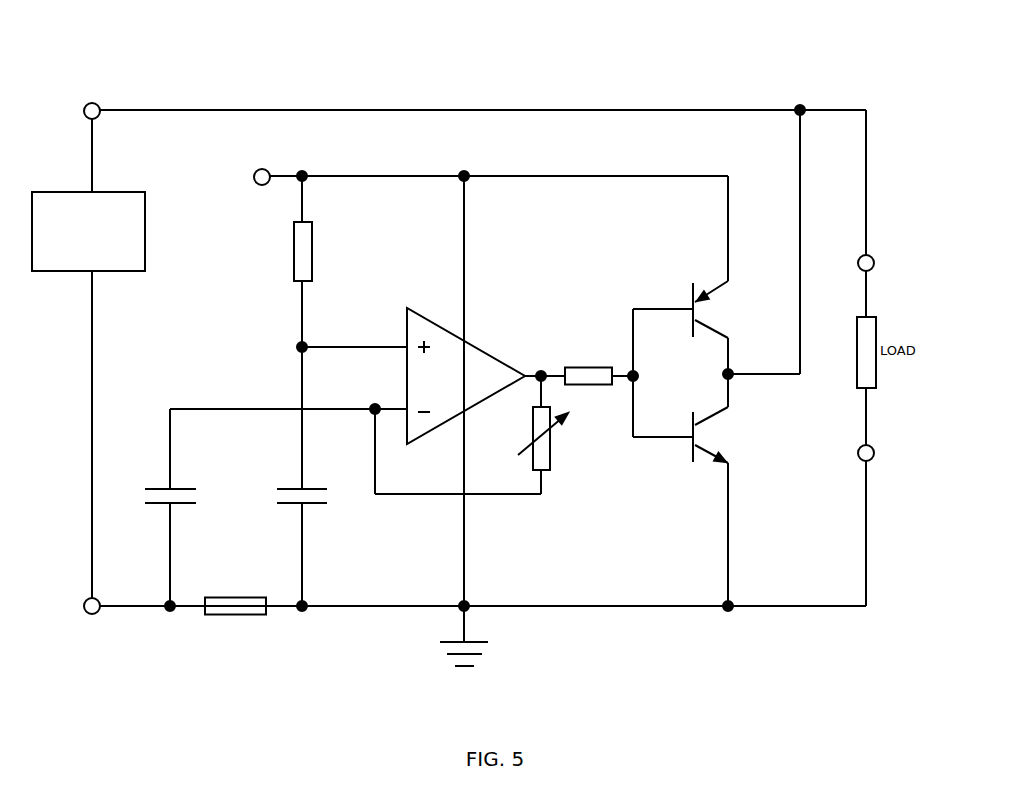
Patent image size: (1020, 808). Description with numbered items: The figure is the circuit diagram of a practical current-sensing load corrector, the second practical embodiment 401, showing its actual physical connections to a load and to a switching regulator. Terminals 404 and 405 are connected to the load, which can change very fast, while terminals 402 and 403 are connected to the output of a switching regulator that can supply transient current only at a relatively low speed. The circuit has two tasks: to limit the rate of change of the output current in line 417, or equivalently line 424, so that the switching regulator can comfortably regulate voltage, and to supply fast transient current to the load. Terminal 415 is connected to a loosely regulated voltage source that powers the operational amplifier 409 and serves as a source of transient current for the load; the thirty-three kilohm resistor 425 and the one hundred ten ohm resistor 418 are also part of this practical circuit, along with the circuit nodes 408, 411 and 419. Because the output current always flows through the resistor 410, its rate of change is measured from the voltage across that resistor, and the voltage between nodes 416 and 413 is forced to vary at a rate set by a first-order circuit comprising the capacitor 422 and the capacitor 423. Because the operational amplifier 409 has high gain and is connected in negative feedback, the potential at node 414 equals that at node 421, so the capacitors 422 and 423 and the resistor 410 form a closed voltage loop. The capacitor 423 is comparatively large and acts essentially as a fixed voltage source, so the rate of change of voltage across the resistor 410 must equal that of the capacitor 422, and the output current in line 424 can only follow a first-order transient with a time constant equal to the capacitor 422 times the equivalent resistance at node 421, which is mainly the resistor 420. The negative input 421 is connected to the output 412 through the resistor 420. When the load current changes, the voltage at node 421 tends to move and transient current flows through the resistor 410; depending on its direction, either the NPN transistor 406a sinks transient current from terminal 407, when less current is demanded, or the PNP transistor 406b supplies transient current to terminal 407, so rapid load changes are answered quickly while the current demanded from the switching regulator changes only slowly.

The second practical embodiment of the load corrector 401 is at (513, 83).
The terminal 402 is at (72, 113).
The terminal 403 is at (72, 607).
The terminal 404 is at (884, 213).
The terminal 405 is at (885, 497).
The NPN transistor 406a is at (725, 490).
The PNP transistor 406b is at (726, 327).
The terminal 407 is at (774, 226).
The node 408 is at (726, 622).
The operational amplifier 409 is at (466, 376).
The resistor 410 is at (235, 594).
The ground node 411 is at (474, 421).
The output 412 is at (545, 363).
The node 413 is at (171, 571).
The node 414 is at (331, 414).
The terminal 415 is at (469, 224).
The node 416 is at (309, 572).
The line 417 is at (483, 99).
The resistor 418 is at (599, 363).
The node 419 is at (660, 373).
The resistor 420 is at (553, 435).
The negative input 421 is at (355, 449).
The capacitor 422 is at (151, 459).
The capacitor 423 is at (282, 499).
The line 424 is at (127, 600).
The resistor 425 is at (281, 261).